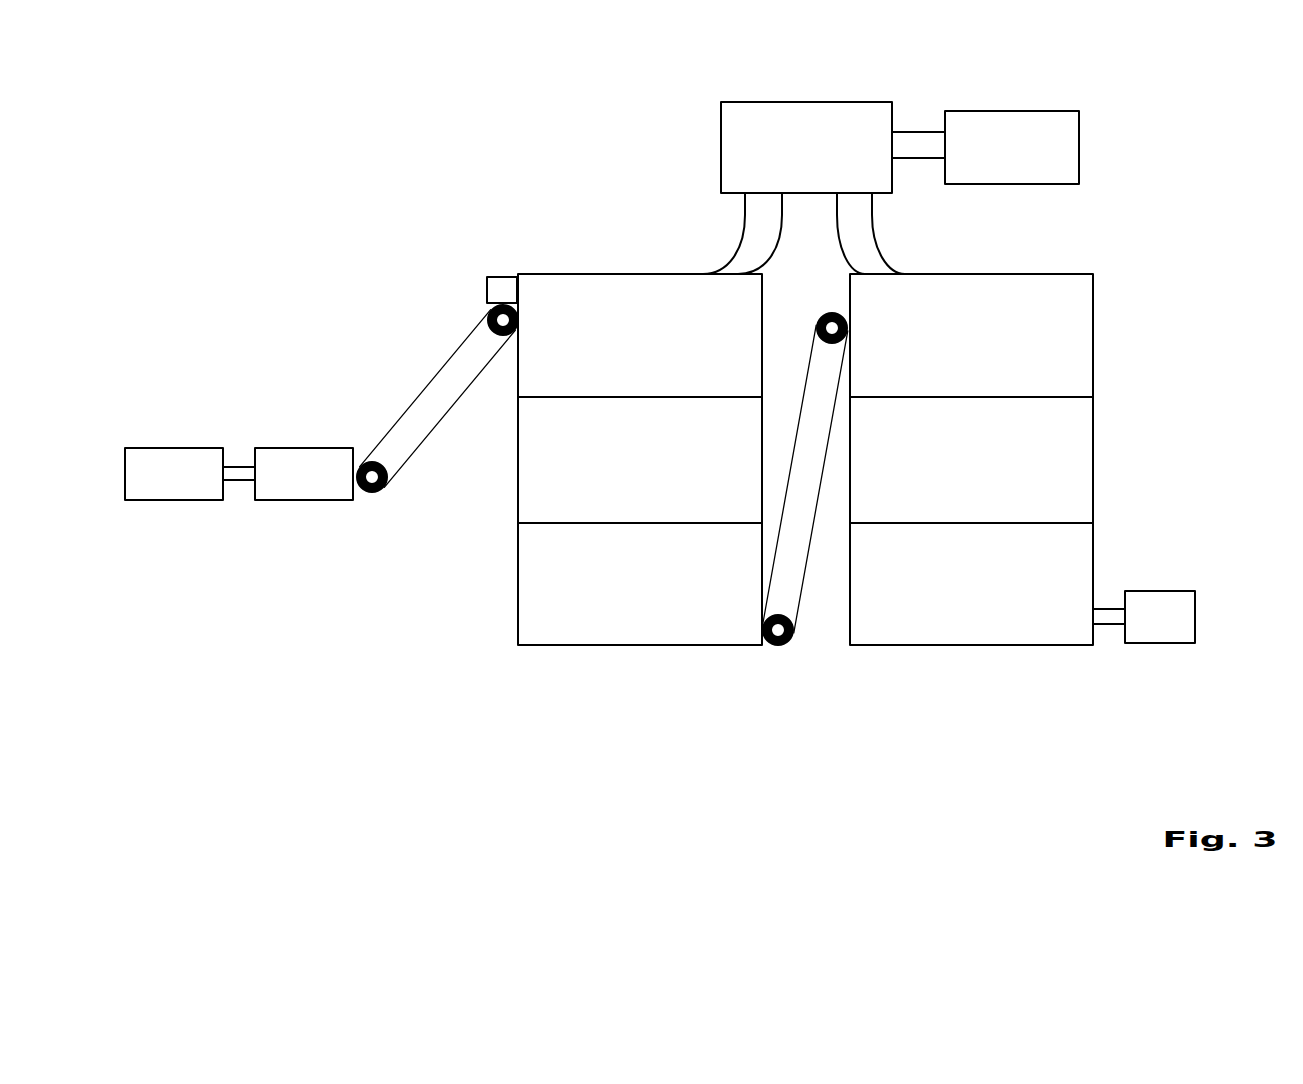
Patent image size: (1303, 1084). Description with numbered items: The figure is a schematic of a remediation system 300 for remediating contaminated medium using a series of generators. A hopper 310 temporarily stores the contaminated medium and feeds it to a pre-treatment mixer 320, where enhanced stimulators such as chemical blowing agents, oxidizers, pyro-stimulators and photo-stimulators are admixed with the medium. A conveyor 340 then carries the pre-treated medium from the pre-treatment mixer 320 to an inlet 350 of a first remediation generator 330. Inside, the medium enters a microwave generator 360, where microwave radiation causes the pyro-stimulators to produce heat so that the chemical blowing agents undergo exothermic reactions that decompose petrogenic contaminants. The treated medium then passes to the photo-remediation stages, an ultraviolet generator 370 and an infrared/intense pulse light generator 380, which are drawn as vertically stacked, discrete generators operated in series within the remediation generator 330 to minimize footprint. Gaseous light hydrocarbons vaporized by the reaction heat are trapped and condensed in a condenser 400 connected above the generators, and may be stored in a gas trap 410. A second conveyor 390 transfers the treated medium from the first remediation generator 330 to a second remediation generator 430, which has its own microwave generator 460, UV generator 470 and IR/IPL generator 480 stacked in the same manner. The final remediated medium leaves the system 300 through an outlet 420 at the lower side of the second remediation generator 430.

The remediation system 300 is at (322, 124).
The hopper 310 is at (175, 462).
The pre-treatment mixer 320 is at (295, 462).
The remediation generator 330 is at (603, 661).
The conveyor 340 is at (422, 363).
The inlet 350 is at (492, 258).
The microwave generator 360 is at (585, 307).
The ultraviolet generator 370 is at (541, 475).
The infrared/intense pulse light generator 380 is at (541, 603).
The second conveyor 390 is at (819, 616).
The condenser 400 is at (802, 140).
The gas trap 410 is at (1009, 140).
The outlet 420 is at (1172, 628).
The second remediation generator 430 is at (973, 661).
The microwave generator 460 is at (1033, 322).
The UV generator 470 is at (1064, 460).
The IR/IPL generator 480 is at (1082, 577).